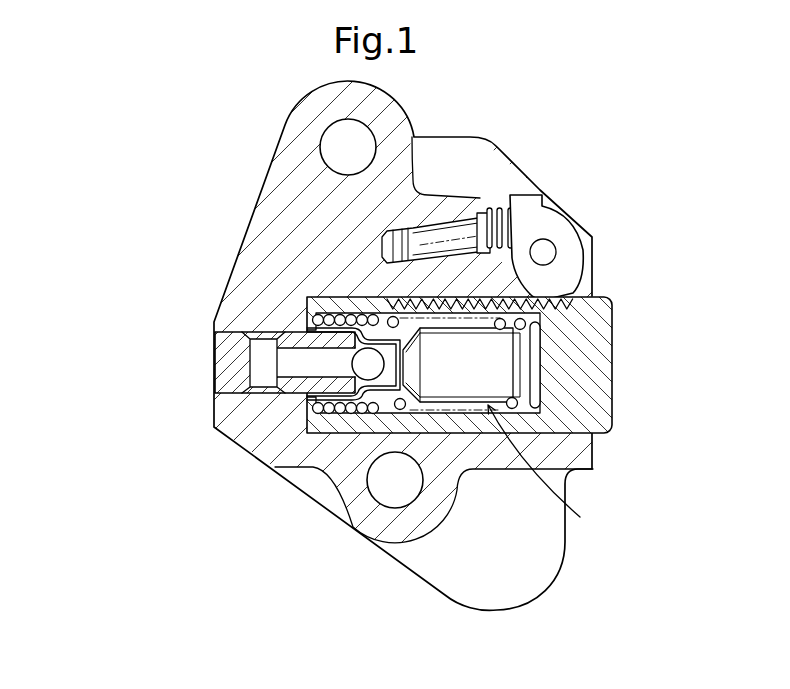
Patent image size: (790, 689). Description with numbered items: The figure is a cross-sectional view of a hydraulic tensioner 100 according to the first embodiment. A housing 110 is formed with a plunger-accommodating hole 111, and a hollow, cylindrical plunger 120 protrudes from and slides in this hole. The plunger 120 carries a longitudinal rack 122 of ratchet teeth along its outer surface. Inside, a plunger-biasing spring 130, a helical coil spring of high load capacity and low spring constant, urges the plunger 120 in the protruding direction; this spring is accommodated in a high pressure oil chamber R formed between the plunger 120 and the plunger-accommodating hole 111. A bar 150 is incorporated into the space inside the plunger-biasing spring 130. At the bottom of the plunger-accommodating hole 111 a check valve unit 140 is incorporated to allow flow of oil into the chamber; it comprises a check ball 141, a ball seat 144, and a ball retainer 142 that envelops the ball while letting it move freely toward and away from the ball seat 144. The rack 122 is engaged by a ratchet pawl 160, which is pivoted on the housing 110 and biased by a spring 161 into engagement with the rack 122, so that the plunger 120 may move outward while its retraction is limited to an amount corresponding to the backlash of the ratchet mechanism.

The hydraulic tensioner 100 is at (141, 292).
The housing 110 is at (395, 350).
The plunger-accommodating hole 111 is at (318, 295).
The plunger 120 is at (460, 341).
The rack 122 is at (527, 297).
The plunger-biasing spring 130 is at (528, 413).
The check valve unit 140 is at (292, 473).
The check ball 141 is at (335, 399).
The ball retainer 142 is at (368, 365).
The ball seat 144 is at (277, 394).
The bar 150 is at (447, 373).
The ratchet pawl 160 is at (560, 233).
The spring 161 is at (490, 215).
The high pressure oil chamber R is at (546, 470).